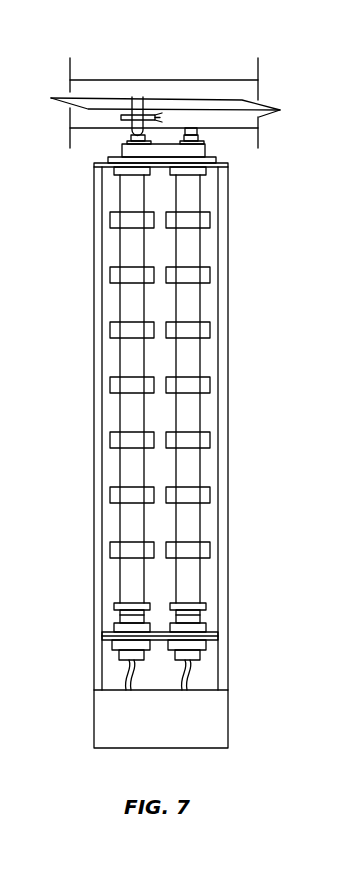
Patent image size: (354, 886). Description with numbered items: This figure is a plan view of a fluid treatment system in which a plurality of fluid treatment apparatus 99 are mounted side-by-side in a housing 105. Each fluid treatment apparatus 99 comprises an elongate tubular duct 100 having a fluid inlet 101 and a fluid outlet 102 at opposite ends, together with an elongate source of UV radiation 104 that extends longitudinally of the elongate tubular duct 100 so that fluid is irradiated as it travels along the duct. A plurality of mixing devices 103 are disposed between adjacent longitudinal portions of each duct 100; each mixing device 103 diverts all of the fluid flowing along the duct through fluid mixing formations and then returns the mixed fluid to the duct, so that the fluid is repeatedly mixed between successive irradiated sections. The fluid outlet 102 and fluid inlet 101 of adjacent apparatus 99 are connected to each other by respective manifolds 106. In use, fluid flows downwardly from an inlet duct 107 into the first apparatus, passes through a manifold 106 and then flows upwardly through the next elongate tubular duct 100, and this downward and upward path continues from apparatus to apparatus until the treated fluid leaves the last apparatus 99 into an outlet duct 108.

The fluid treatment apparatus 99 is at (96, 409).
The elongate tubular duct 100 is at (128, 455).
The fluid inlet 101 is at (105, 167).
The fluid outlet 102 is at (197, 163).
The mixing device 103 is at (202, 275).
The elongate source of UV radiation 104 is at (197, 646).
The housing 105 is at (227, 295).
The manifold 106 is at (190, 150).
The inlet duct 107 is at (170, 118).
The outlet duct 108 is at (110, 92).